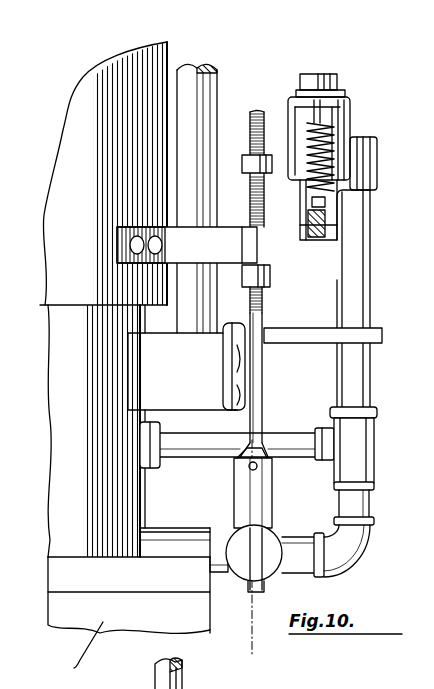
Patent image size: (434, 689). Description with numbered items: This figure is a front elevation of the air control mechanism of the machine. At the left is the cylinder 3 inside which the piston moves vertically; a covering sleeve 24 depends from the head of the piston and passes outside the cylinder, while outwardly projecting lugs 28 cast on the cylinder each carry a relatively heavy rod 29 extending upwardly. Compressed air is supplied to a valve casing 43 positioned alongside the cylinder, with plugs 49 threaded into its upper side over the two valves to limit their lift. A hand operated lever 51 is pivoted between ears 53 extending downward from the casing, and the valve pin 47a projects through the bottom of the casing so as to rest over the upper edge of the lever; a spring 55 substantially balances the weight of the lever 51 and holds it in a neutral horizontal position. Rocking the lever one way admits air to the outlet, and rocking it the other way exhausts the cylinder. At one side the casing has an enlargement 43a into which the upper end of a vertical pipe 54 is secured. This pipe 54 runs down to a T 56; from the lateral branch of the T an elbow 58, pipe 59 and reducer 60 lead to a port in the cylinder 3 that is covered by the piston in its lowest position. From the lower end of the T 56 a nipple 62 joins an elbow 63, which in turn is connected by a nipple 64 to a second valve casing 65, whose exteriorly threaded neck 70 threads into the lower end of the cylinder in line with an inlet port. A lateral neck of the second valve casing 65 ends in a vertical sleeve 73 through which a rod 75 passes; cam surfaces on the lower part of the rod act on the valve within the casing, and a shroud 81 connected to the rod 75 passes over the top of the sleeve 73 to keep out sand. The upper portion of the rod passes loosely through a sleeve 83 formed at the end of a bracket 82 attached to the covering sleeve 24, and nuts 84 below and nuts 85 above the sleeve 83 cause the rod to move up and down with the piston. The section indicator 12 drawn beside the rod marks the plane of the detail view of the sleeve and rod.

The covering sleeve 24 is at (168, 52).
The cylinder 3 is at (120, 503).
The heavy rod 29 is at (217, 93).
The nuts 85 is at (249, 157).
The plugs 49 is at (338, 83).
The valve casing 43 is at (342, 138).
The enlargement 43a is at (378, 157).
The spring 55 is at (329, 157).
The valve pin 47a is at (315, 200).
The hand operated lever 51 is at (317, 240).
The ears 53 is at (333, 232).
The bracket 82 is at (218, 243).
The vertical pipe 54 is at (370, 260).
The sleeve 83 is at (270, 268).
The nuts 84 is at (266, 300).
The lugs 28 is at (218, 328).
The rod 75 is at (250, 372).
The rod 12 is at (262, 390).
The pipe 59 is at (213, 458).
The elbow 58 is at (320, 429).
The T 56 is at (365, 447).
The reducer 60 is at (150, 470).
The threaded neck 70 is at (215, 540).
The shroud 81 is at (272, 485).
The second valve casing 65 is at (281, 538).
The nipple 64 is at (305, 578).
The nipple 62 is at (370, 505).
The elbow 63 is at (360, 562).
The sleeve 73 is at (260, 572).